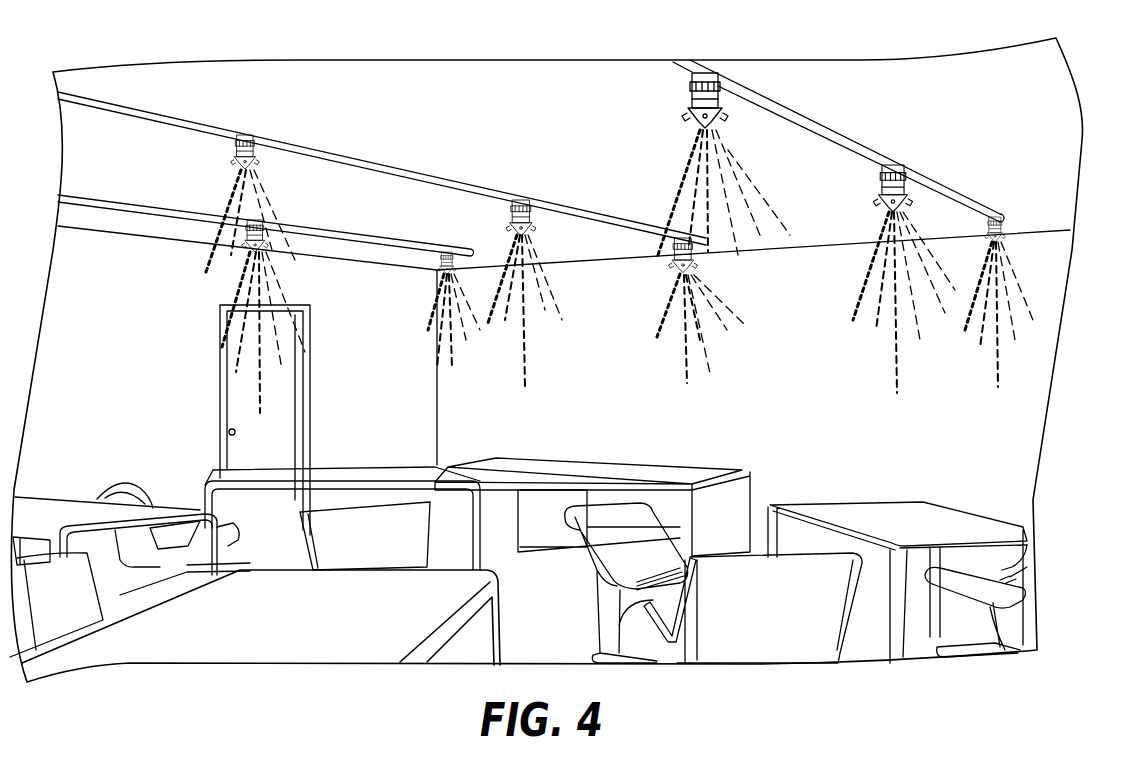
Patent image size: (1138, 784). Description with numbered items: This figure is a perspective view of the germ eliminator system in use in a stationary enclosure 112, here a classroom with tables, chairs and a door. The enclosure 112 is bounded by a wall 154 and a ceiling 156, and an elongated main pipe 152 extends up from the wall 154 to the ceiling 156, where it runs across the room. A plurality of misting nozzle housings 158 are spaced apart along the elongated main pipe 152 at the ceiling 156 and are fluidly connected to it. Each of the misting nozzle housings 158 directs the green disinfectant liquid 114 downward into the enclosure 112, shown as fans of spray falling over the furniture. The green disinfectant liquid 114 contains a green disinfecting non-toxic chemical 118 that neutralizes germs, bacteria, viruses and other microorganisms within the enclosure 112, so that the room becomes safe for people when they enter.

The enclosure 112 is at (787, 411).
The green disinfectant liquid 114 is at (667, 187).
The green disinfecting non-toxic chemical 118 is at (895, 344).
The elongated main pipe 152 is at (414, 172).
The wall 154 is at (988, 420).
The ceiling 156 is at (853, 98).
The misting nozzle housings 158 is at (237, 150).